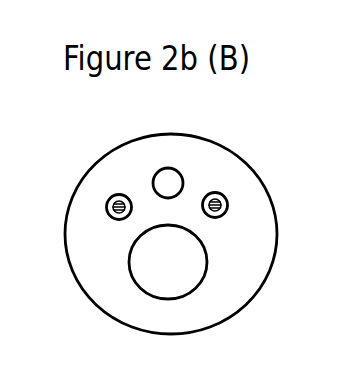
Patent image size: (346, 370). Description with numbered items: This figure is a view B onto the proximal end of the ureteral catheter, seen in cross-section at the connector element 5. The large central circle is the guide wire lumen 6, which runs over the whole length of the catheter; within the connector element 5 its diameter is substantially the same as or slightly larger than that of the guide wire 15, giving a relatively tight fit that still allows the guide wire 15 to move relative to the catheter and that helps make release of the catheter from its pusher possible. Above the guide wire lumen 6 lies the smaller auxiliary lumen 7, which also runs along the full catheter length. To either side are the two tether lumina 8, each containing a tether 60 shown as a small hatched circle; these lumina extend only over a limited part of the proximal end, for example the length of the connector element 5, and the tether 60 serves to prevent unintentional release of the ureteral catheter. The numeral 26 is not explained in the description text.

The connector element 5 is at (230, 175).
The auxiliary lumen 7 is at (158, 170).
The tether lumina 8 is at (106, 208).
The tether 60 is at (111, 214).
The guide wire lumen 6 is at (133, 282).
The guide wire 15 is at (183, 270).
The component (label only) 26 is at (332, 344).